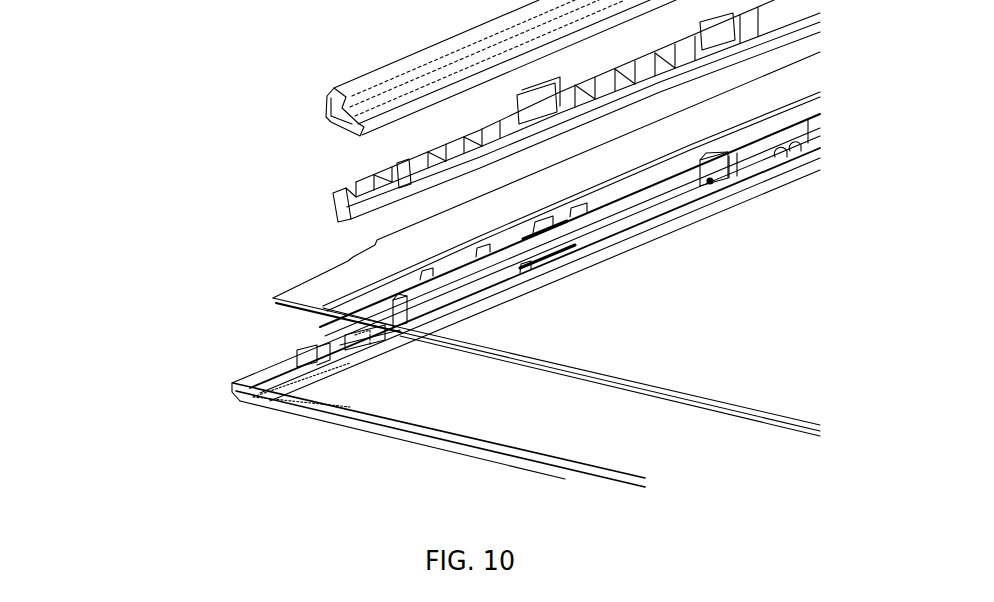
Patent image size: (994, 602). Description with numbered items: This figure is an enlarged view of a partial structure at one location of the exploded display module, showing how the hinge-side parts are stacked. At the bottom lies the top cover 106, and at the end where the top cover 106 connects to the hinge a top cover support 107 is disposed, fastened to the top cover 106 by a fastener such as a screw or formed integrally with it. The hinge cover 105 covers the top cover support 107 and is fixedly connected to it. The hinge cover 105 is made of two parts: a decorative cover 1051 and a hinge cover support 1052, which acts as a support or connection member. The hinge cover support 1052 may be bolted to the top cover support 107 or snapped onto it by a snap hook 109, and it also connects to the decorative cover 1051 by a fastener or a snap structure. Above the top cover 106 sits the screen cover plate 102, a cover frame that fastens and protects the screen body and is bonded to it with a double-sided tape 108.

The hinge cover 105 is at (176, 36).
The decorative cover 1051 is at (362, 82).
The hinge cover support 1052 is at (341, 206).
The screen cover plate 102 is at (342, 283).
The top cover support 107 is at (660, 203).
The snap hook 109 is at (660, 170).
The double-sided tape 108 is at (325, 332).
The top cover 106 is at (345, 412).